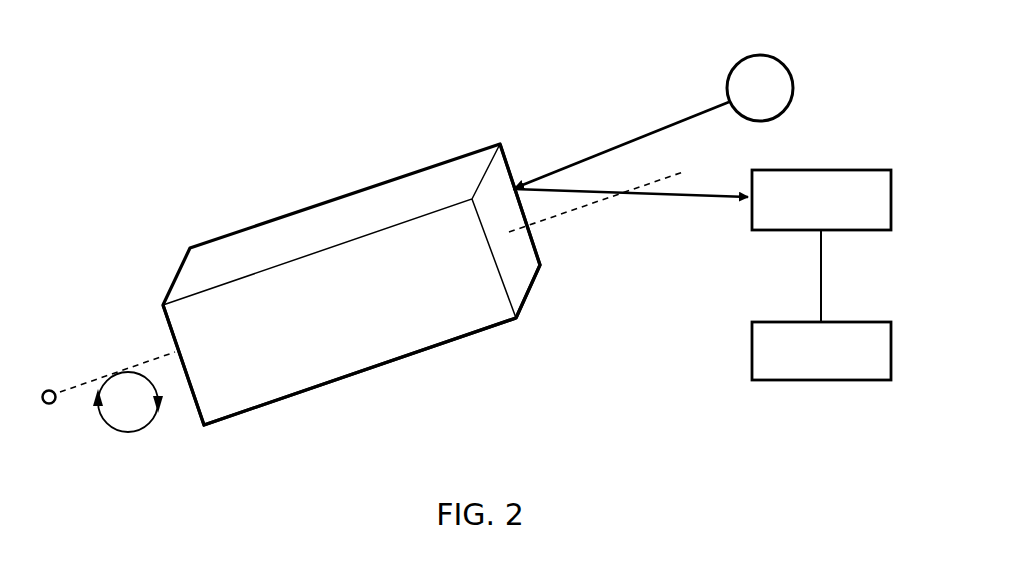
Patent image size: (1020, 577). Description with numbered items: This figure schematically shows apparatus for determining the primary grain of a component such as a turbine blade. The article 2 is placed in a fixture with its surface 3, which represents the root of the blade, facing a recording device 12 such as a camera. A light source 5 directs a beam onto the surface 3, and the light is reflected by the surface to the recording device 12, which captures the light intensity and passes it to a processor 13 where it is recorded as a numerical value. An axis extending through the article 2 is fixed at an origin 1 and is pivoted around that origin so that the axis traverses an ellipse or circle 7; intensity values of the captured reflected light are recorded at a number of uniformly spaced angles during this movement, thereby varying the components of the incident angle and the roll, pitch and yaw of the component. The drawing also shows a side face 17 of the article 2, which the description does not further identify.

The origin 1 is at (51, 389).
The article 2 is at (396, 146).
The surface 3 is at (523, 277).
The light source 5 is at (780, 78).
The ellipse or circle 7 is at (145, 428).
The recording device 12 is at (702, 200).
The processor 13 is at (821, 305).
The side surface 17 is at (330, 355).